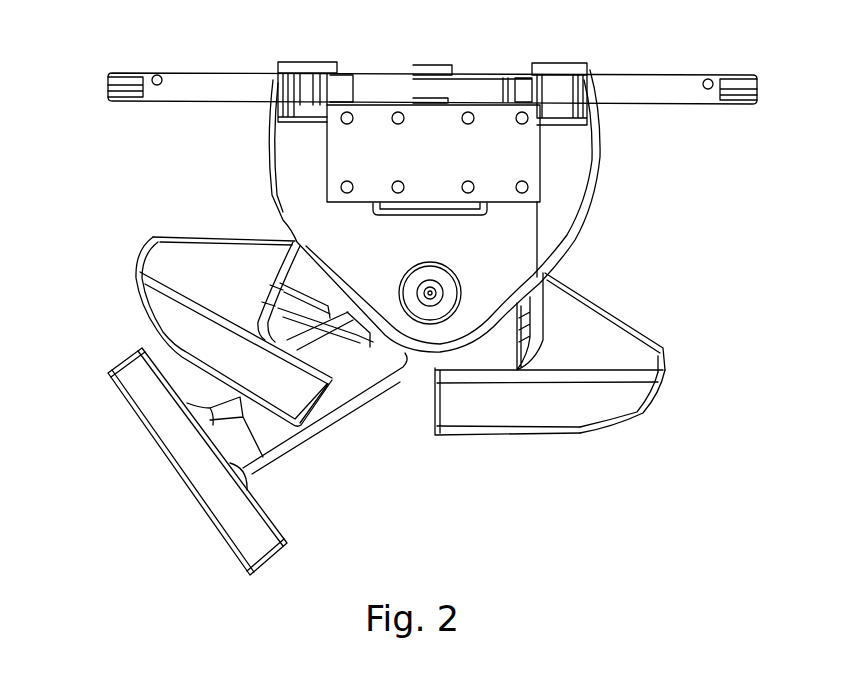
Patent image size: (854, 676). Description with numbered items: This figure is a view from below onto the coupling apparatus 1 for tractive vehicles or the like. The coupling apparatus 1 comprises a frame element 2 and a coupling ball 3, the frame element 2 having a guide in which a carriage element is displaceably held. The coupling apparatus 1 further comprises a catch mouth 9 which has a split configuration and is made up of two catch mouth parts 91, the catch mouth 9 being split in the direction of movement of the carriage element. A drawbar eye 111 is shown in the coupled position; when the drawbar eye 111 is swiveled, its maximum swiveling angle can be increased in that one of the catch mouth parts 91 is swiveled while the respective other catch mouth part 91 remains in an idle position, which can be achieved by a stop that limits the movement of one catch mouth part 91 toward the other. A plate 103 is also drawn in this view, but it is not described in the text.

The coupling apparatus 1 is at (223, 45).
The frame element 2 is at (503, 238).
The coupling ball 3 is at (437, 292).
The catch mouth 9 is at (231, 281).
The catch mouth parts 91 is at (165, 310).
The fixing plate 103 is at (411, 164).
The drawbar eye 111 is at (192, 457).